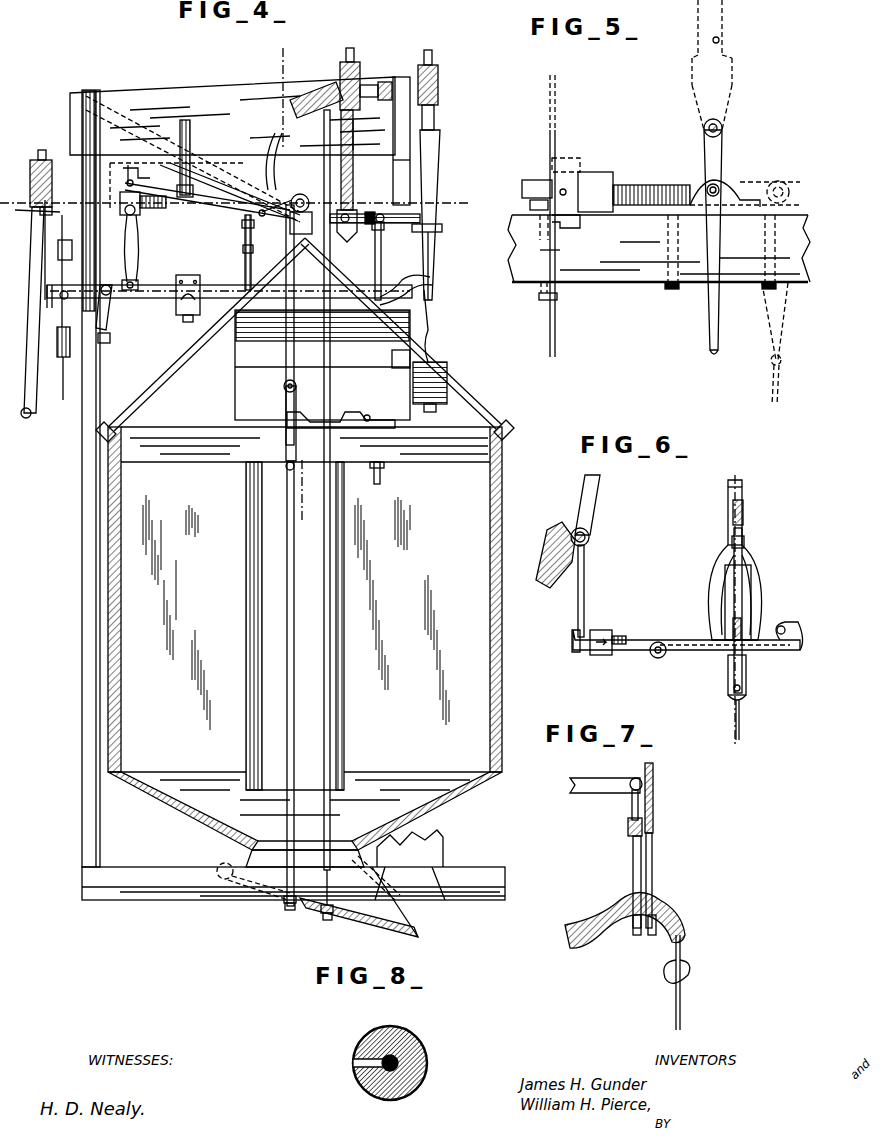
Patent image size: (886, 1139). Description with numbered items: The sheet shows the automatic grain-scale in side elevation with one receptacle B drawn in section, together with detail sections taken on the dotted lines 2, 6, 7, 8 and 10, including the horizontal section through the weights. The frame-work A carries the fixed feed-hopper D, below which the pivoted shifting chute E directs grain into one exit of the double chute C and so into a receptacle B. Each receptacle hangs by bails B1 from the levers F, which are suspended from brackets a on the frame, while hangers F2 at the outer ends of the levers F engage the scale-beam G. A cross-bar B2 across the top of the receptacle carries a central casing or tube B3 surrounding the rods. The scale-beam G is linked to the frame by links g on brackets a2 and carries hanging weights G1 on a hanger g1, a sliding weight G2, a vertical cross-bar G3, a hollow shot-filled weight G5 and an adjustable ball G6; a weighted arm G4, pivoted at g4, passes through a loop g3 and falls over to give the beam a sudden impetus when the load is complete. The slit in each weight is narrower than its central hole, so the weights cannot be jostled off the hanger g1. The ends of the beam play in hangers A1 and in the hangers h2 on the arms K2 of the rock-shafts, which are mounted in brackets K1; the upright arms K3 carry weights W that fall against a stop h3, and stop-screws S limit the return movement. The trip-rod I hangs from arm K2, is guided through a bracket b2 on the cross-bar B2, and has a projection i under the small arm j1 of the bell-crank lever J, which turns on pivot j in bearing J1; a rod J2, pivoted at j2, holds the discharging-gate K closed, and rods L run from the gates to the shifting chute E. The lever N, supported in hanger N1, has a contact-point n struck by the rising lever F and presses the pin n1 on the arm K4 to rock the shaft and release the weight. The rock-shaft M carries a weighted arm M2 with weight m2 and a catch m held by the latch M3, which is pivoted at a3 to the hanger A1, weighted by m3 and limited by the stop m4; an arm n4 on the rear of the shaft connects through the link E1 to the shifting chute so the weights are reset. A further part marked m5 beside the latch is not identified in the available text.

In FIG. 4, the frame-work A is at (188, 90).
In FIG. 4, the hangers A1 is at (410, 200).
In FIG. 6, the hangers A1 is at (744, 494).
In FIG. 7, the hangers A1 is at (655, 808).
In FIG. 4, the brackets a is at (274, 154).
In FIG. 6, the brackets a is at (548, 559).
In FIG. 4, the brackets a2 is at (235, 159).
In FIG. 6, the pivots a3 is at (658, 658).
In FIG. 4, the grain-receptacle B is at (490, 665).
In FIG. 4, the bails B1 is at (165, 385).
In FIG. 4, the cross-bar B2 is at (160, 478).
In FIG. 5, the cross-bar B2 is at (637, 270).
In FIG. 4, the casing or tube B3 is at (246, 575).
In FIG. 4, the brackets b2 is at (381, 478).
In FIG. 5, the brackets b2 is at (560, 300).
In FIG. 4, the double chute C is at (440, 418).
In FIG. 4, the feed-hopper D is at (212, 188).
In FIG. 4, the shifting chute E is at (245, 256).
In FIG. 4, the links E1 is at (245, 268).
In FIG. 4, the levers F is at (171, 213).
In FIG. 4, the hangers F2 is at (140, 235).
In FIG. 4, the scale-beam G is at (432, 280).
In FIG. 6, the scale-beam G is at (748, 622).
In FIG. 7, the scale-beam G is at (608, 910).
In FIG. 4, the hanging weights G1 is at (440, 362).
In FIG. 8, the hanging weights G1 is at (392, 1100).
In FIG. 4, the sliding weight G2 is at (186, 275).
In FIG. 4, the cross-bar G3 is at (63, 382).
In FIG. 4, the weighted arm G4 is at (38, 158).
In FIG. 4, the weight G5 is at (63, 335).
In FIG. 4, the adjustable ball G6 is at (60, 263).
In FIG. 4, the links g is at (112, 312).
In FIG. 4, the hanger g1 is at (430, 325).
In FIG. 6, the hanger g1 is at (741, 718).
In FIG. 7, the hanger g1 is at (682, 1012).
In FIG. 8, the hanger g1 is at (402, 1055).
In FIG. 4, the loop g3 is at (30, 216).
In FIG. 4, the pivot g4 is at (27, 418).
In FIG. 4, the hangers h2 is at (386, 261).
In FIG. 6, the hangers h2 is at (755, 566).
In FIG. 7, the hangers h2 is at (633, 860).
In FIG. 4, the stop h3 is at (300, 85).
In FIG. 4, the trip-rod I is at (331, 347).
In FIG. 5, the trip-rod I is at (556, 136).
In FIG. 5, the projection i is at (566, 230).
In FIG. 4, the bell-crank lever J is at (312, 412).
In FIG. 5, the bell-crank lever J is at (628, 185).
In FIG. 4, the bearings J1 is at (286, 432).
In FIG. 5, the bearings J1 is at (735, 205).
In FIG. 4, the rods J2 is at (296, 582).
In FIG. 5, the rods J2 is at (718, 335).
In FIG. 4, the pivot j is at (285, 412).
In FIG. 5, the pivot j is at (720, 186).
In FIG. 5, the small arm j1 is at (560, 175).
In FIG. 4, the pivots j2 is at (284, 385).
In FIG. 5, the pivots j2 is at (722, 125).
In FIG. 4, the discharging-gate K is at (370, 918).
In FIG. 4, the bracket K1 is at (341, 145).
In FIG. 4, the rock-shaft arm K2 is at (382, 214).
In FIG. 6, the rock-shaft arm K2 is at (745, 528).
In FIG. 7, the rock-shaft arm K2 is at (604, 793).
In FIG. 4, the weighted arm K3 is at (362, 135).
In FIG. 4, the rock-shaft arm K4 is at (340, 236).
In FIG. 4, the rods L is at (318, 338).
In FIG. 4, the rock-shaft M is at (442, 228).
In FIG. 6, the rock-shaft M is at (590, 530).
In FIG. 4, the weighted arm M2 is at (436, 180).
In FIG. 6, the weighted arm M2 is at (550, 492).
In FIG. 6, the latch M3 is at (688, 640).
In FIG. 7, the latch M3 is at (652, 935).
In FIG. 4, the catch m is at (432, 262).
In FIG. 6, the catch m is at (586, 616).
In FIG. 4, the weight m2 is at (438, 80).
In FIG. 6, the weight m3 is at (592, 652).
In FIG. 6, the stop m4 is at (798, 625).
In FIG. 6, the spring m5 is at (612, 630).
In FIG. 4, the lever N is at (177, 186).
In FIG. 4, the hangers N1 is at (192, 150).
In FIG. 4, the contact-point n is at (117, 191).
In FIG. 4, the contact-point n1 is at (285, 214).
In FIG. 4, the arm n4 is at (246, 223).
In FIG. 4, the stop-screws S is at (372, 84).
In FIG. 4, the weight W is at (340, 70).
In FIG. 4, the dotted line 2 2 is at (292, 283).
In FIG. 4, the dotted line 6 6 is at (411, 298).
In FIG. 6, the dotted line 7 7 is at (736, 611).
In FIG. 4, the dotted line 8 8 is at (460, 364).
In FIG. 4, the dotted line 10 10 is at (242, 199).